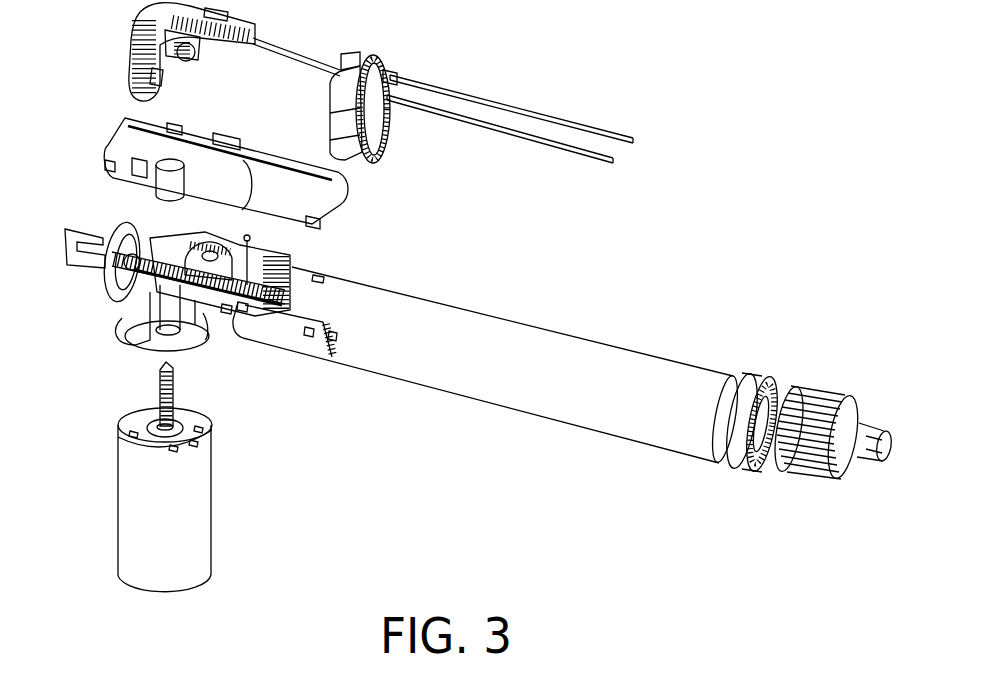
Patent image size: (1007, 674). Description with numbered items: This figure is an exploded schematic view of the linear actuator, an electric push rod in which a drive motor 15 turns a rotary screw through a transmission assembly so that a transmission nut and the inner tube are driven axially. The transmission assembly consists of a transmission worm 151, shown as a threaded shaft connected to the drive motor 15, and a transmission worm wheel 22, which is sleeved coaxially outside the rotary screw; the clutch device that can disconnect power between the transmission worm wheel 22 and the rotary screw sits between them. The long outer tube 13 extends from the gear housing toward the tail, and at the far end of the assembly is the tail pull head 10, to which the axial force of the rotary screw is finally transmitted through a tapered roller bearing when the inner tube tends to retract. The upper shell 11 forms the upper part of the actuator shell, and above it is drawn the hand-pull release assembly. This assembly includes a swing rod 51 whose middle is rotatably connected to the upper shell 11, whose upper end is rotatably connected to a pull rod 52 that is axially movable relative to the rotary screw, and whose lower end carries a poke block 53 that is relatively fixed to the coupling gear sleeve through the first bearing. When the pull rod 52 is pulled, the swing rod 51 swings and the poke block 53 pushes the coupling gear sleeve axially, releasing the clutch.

The tail pull head 10 is at (75, 232).
The upper shell 11 is at (123, 143).
The outer tube 13 is at (420, 333).
The drive motor 15 is at (133, 517).
The transmission worm 151 is at (160, 380).
The transmission worm wheel 22 is at (195, 240).
The swing rod 51 is at (133, 38).
The pull rod 52 is at (297, 47).
The poke block 53 is at (157, 77).